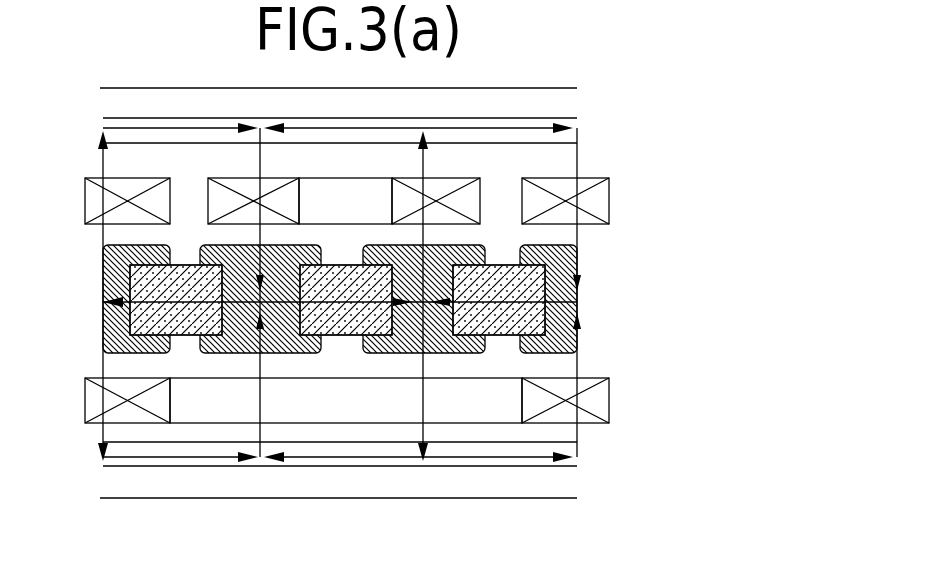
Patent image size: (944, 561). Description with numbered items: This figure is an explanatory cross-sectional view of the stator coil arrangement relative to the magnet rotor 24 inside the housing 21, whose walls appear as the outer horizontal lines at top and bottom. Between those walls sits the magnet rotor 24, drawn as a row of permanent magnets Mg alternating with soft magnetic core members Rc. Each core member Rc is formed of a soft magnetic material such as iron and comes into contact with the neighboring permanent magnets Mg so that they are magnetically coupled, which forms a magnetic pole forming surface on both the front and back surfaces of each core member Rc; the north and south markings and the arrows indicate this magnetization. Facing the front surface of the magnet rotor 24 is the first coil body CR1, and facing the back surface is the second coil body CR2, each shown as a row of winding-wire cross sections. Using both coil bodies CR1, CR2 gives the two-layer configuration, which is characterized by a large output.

The housing 21 is at (538, 96).
The first coil body CR1 is at (553, 180).
The second coil body CR2 is at (609, 402).
The soft magnetic core member Rc is at (103, 262).
The permanent magnet Mg is at (179, 337).
The magnet rotor 24 is at (603, 301).